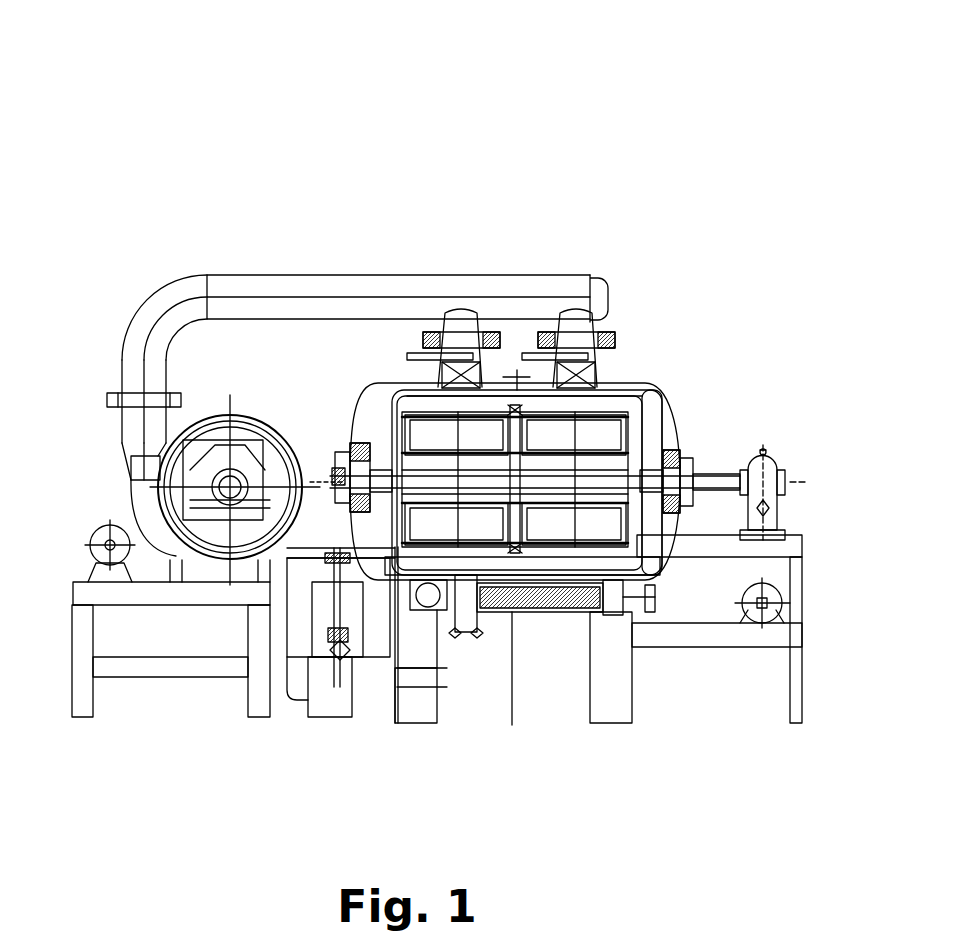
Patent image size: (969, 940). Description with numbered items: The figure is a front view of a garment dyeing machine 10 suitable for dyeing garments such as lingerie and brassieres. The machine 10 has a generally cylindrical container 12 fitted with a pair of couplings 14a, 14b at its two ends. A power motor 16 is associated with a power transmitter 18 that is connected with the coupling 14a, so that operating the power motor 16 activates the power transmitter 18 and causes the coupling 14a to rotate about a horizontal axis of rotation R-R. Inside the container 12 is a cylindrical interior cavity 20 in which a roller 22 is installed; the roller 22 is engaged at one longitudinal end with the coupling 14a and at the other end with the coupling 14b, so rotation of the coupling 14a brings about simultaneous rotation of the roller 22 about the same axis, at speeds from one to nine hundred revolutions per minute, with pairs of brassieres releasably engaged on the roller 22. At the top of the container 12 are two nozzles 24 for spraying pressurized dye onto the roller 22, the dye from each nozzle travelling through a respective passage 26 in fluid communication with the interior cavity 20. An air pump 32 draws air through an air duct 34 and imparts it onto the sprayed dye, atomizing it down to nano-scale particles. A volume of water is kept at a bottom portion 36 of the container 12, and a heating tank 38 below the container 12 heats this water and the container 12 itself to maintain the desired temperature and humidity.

The garment dyeing machine 10 is at (490, 179).
The container 12 is at (645, 432).
The coupling 14a is at (668, 440).
The coupling 14b is at (354, 445).
The power motor 16 is at (757, 612).
The power transmitter 18 is at (770, 464).
The interior cavity 20 is at (602, 410).
The roller 22 is at (557, 548).
The nozzles 24 is at (462, 357).
The passage 26 is at (445, 378).
The air pump 32 is at (165, 487).
The air duct 34 is at (297, 288).
The bottom portion 36 is at (472, 565).
The heating tank 38 is at (532, 600).